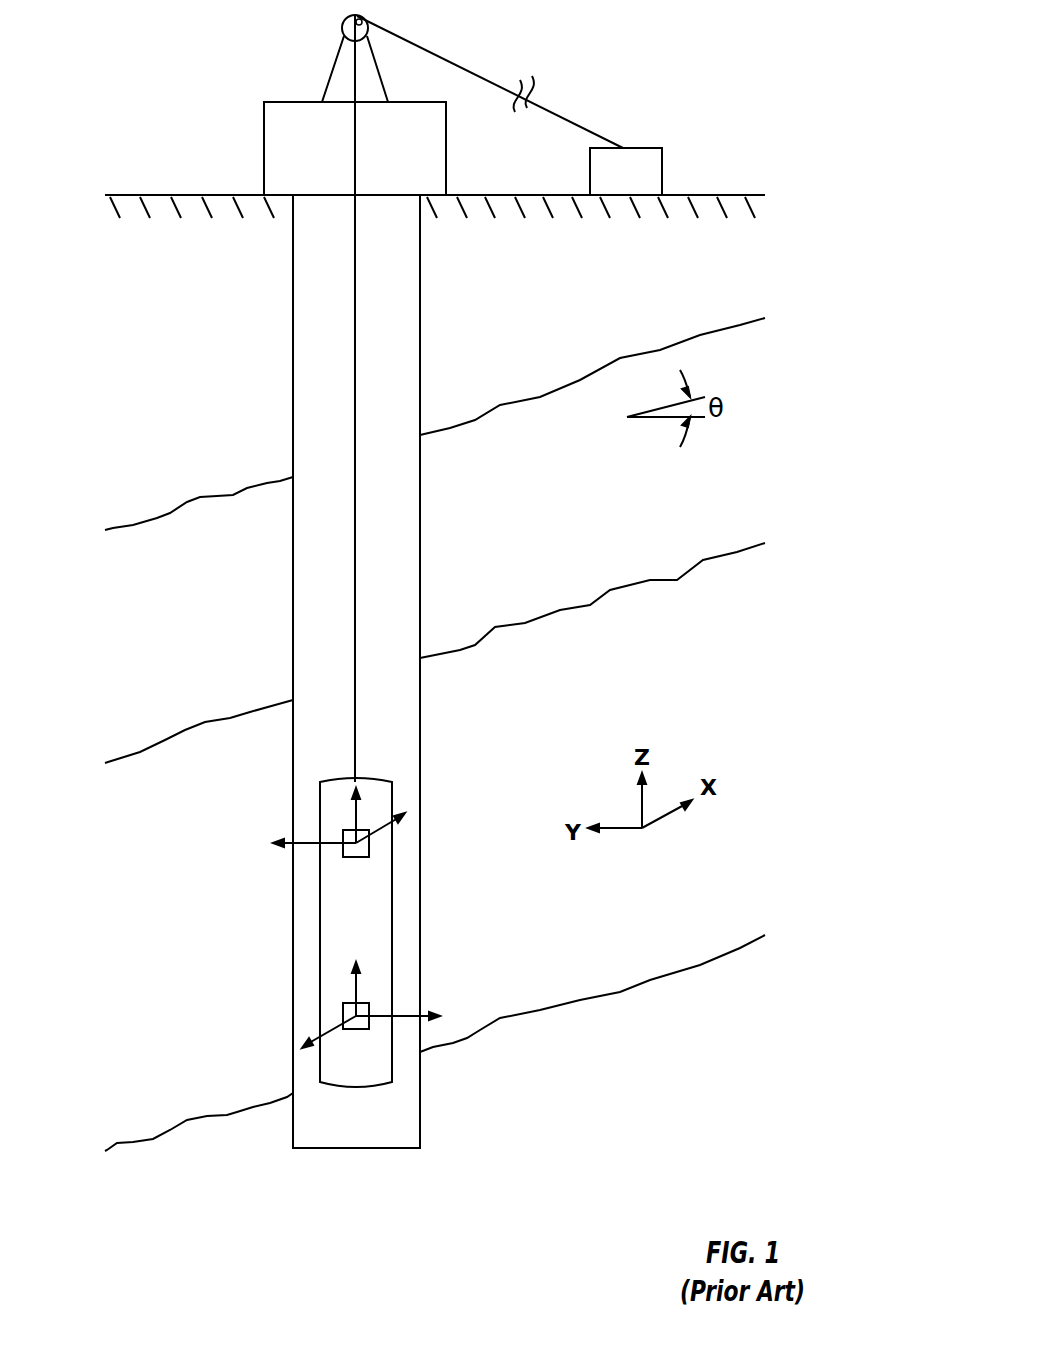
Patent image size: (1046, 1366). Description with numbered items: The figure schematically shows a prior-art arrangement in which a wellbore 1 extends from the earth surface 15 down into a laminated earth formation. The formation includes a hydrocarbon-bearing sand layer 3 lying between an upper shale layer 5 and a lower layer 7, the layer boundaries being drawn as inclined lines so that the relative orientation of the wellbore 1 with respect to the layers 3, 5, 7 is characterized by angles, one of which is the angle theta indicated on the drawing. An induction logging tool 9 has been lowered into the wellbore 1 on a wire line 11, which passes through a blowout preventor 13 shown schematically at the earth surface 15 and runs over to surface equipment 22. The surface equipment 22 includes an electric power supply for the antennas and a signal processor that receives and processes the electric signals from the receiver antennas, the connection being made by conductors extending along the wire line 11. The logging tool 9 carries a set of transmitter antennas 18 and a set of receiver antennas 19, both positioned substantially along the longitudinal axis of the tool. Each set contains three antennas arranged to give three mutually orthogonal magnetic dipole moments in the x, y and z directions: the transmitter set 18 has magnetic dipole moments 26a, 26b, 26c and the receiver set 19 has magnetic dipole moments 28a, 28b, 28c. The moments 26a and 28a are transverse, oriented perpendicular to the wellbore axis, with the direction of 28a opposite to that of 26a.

The wellbore 1 is at (330, 607).
The hydrocarbon-bearing sand layer 3 is at (172, 948).
The upper shale layer 5 is at (172, 636).
The layer 7 is at (172, 1198).
The induction logging tool 9 is at (318, 947).
The wire line 11 is at (453, 57).
The blowout preventor 13 is at (280, 138).
The earth surface 15 is at (180, 195).
The set of transmitter antennas 18 is at (348, 826).
The set of receiver antennas 19 is at (348, 1002).
The surface equipment 22 is at (663, 167).
The magnetic dipole moment 26a is at (388, 829).
The magnetic dipole moment 26b is at (303, 840).
The magnetic dipole moment 26c is at (357, 807).
The magnetic dipole moment 28a is at (333, 1028).
The magnetic dipole moment 28b is at (400, 1015).
The magnetic dipole moment 28c is at (357, 982).